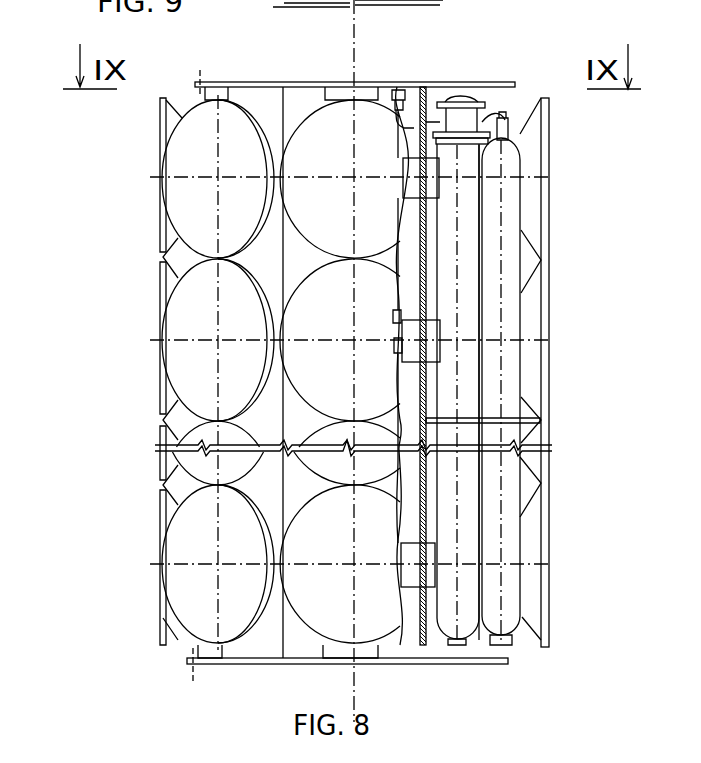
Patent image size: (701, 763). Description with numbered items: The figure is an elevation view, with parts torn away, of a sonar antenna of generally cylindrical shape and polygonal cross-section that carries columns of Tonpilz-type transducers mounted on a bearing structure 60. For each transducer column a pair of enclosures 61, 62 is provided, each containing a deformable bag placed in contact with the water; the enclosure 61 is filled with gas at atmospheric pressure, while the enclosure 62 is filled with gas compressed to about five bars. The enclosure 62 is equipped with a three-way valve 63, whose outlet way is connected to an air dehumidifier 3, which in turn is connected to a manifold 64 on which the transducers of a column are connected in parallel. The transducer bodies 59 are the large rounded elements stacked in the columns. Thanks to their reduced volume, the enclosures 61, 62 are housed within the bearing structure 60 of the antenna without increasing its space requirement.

The air dehumidifier 3 is at (397, 105).
The tank 59 is at (205, 158).
The bearing structure 60 is at (305, 645).
The enclosure 61 is at (513, 209).
The enclosure 62 is at (467, 313).
The three-way valve 63 is at (465, 120).
The manifold 64 is at (410, 498).